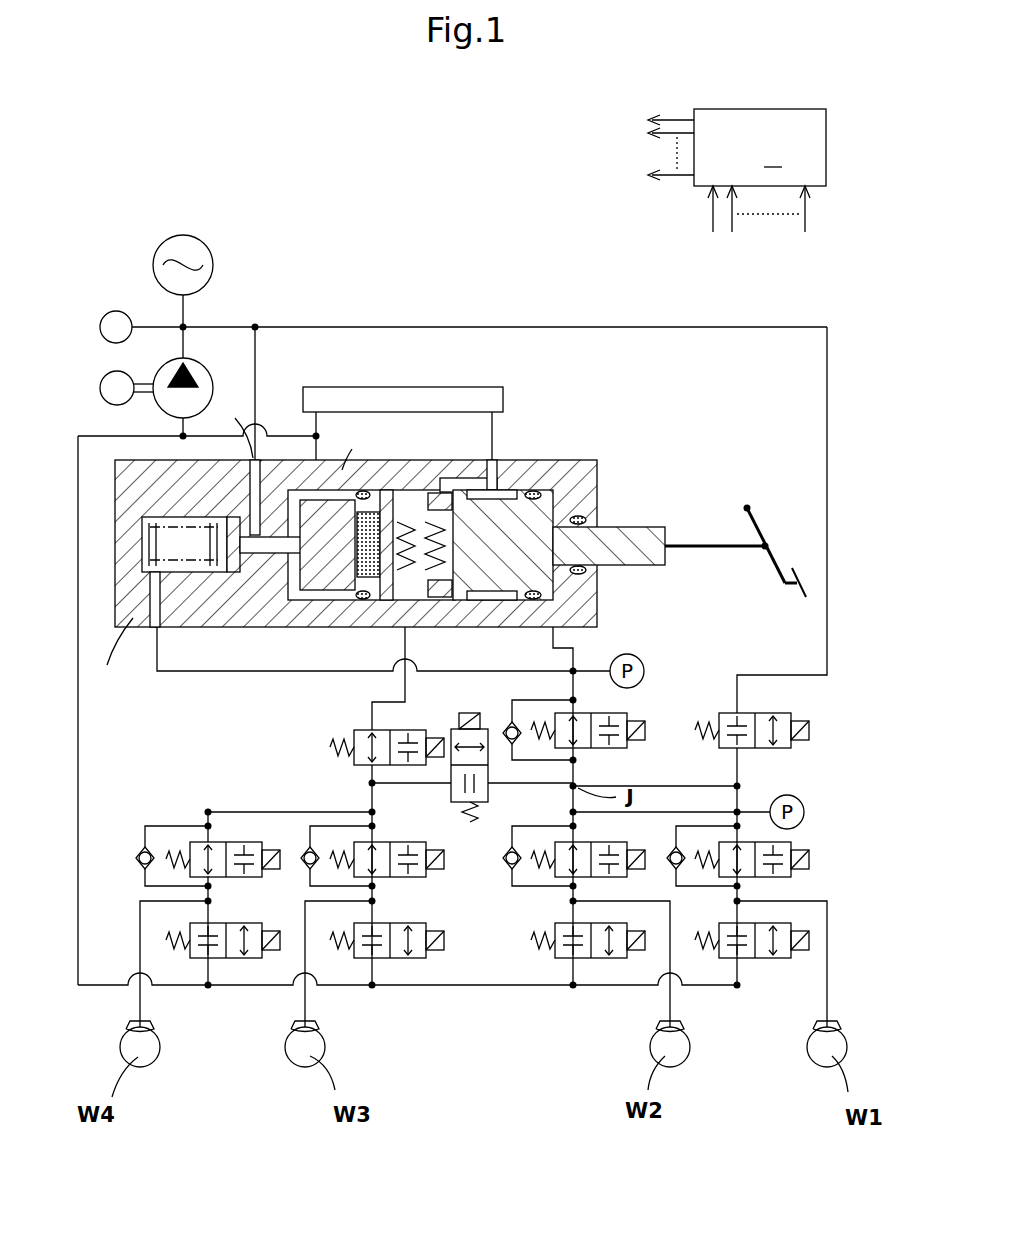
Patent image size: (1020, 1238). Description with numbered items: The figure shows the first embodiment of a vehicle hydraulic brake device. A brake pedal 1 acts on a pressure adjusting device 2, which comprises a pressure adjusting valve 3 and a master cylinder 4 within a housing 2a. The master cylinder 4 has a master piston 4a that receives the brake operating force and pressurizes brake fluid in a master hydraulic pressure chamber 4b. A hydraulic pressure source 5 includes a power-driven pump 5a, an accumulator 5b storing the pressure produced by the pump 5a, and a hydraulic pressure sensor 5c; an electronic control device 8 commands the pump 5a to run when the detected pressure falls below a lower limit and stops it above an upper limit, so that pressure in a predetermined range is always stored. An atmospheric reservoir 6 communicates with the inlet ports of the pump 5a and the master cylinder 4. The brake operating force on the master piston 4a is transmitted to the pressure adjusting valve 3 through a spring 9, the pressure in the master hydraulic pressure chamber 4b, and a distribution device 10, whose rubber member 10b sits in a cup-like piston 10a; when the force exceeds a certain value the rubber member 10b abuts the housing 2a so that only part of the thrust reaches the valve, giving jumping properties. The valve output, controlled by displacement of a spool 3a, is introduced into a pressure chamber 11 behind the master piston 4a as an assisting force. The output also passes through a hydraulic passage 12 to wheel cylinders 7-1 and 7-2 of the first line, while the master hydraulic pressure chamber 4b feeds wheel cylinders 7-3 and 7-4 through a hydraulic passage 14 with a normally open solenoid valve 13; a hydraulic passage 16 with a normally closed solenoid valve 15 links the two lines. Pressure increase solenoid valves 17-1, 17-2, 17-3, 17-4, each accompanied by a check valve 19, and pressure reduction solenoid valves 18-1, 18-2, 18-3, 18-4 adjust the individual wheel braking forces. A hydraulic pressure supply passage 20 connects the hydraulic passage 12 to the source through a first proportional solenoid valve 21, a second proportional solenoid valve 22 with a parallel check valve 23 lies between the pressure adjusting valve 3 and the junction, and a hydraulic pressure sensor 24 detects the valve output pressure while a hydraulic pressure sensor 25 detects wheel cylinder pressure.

The brake pedal 1 is at (790, 570).
The pressure adjusting device 2 is at (367, 544).
The housing 2a is at (132, 500).
The pressure adjusting valve 3 is at (291, 584).
The spool 3a is at (312, 596).
The master cylinder 4 is at (503, 547).
The master piston 4a is at (518, 600).
The master hydraulic pressure chamber 4b is at (470, 600).
The hydraulic pressure source 5 is at (179, 301).
The power-driven pump 5a is at (206, 381).
The accumulator 5b is at (185, 248).
The hydraulic pressure sensor 5c is at (103, 316).
The atmospheric reservoir 6 is at (505, 385).
The wheel cylinder 7-1 is at (815, 1032).
The wheel cylinder 7-2 is at (660, 1028).
The wheel cylinder 7-3 is at (295, 1025).
The wheel cylinder 7-4 is at (130, 1025).
The electronic control device 8 is at (737, 173).
The spring 9 is at (432, 518).
The distribution device 10 is at (403, 547).
The cup-like piston 10a is at (418, 600).
The rubber member 10b is at (364, 600).
The pressure chamber 11 is at (599, 588).
The hydraulic passage 12 is at (228, 673).
The normally open solenoid valve 13 is at (354, 757).
The hydraulic passage 14 is at (370, 714).
The normally closed solenoid valve 15 is at (490, 790).
The hydraulic passage 16 is at (435, 785).
The solenoid valve 17-1 is at (768, 877).
The solenoid valve 17-2 is at (596, 845).
The solenoid valve 17-3 is at (410, 878).
The solenoid valve 17-4 is at (232, 845).
The solenoid valve 18-1 is at (748, 958).
The solenoid valve 18-2 is at (582, 958).
The solenoid valve 18-3 is at (410, 958).
The solenoid valve 18-4 is at (228, 958).
The check valve 19 is at (678, 870).
The hydraulic pressure supply passage 20 is at (618, 786).
The first proportional solenoid valve 21 is at (728, 752).
The second proportional solenoid valve 22 is at (625, 716).
The check valve 23 is at (508, 722).
The hydraulic pressure sensor 24 is at (638, 658).
The hydraulic pressure sensor 25 is at (787, 795).